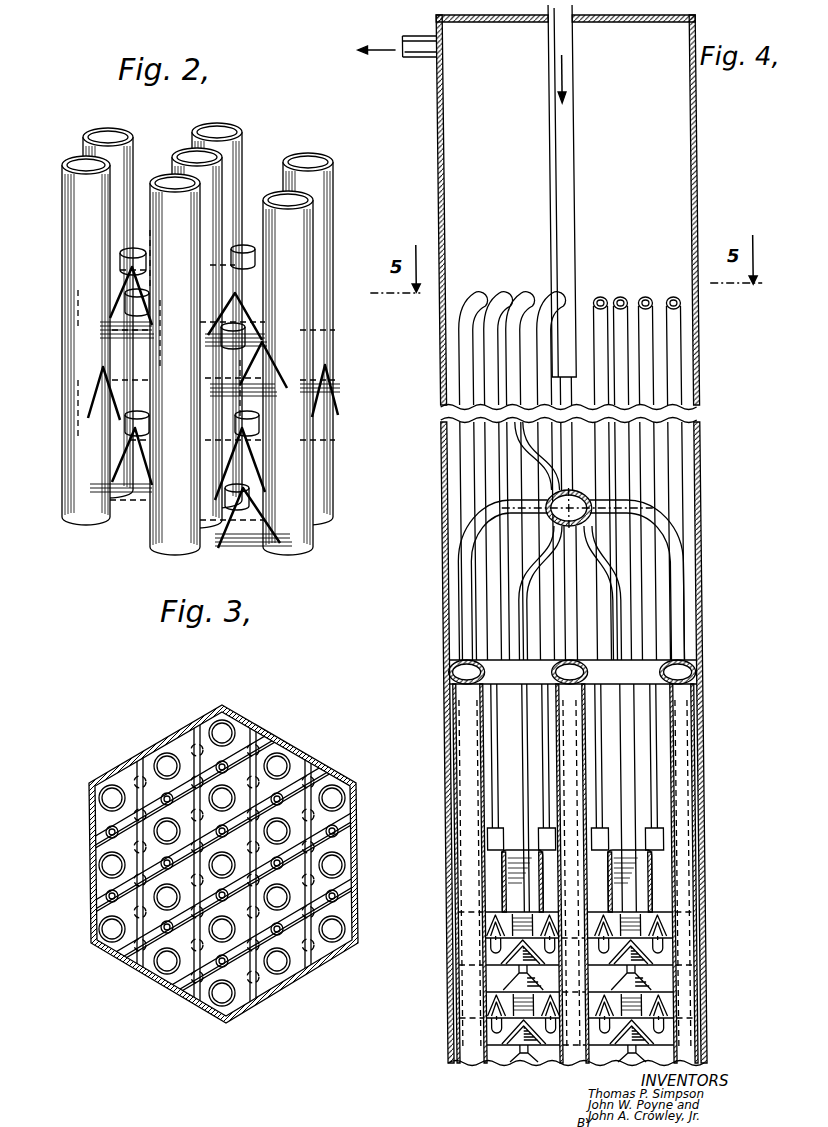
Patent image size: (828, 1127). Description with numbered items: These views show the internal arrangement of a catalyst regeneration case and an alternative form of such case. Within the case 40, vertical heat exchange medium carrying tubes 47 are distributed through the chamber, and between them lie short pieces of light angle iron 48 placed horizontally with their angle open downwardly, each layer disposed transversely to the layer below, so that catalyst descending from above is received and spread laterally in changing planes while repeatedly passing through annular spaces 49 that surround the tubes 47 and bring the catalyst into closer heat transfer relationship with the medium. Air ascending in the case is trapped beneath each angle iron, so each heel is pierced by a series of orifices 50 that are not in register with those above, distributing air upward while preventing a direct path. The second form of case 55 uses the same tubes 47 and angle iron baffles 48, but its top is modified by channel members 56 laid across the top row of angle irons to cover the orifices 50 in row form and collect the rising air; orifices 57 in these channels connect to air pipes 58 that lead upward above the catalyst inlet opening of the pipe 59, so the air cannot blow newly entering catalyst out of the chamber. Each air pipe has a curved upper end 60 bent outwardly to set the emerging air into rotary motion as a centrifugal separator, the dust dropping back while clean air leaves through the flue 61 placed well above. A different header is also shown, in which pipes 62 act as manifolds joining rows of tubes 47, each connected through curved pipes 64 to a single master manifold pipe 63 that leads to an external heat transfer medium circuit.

In FIG. 3, the case 40 is at (359, 838).
In FIG. 2, the heat exchange medium carrying tubes 47 is at (80, 433).
In FIG. 3, the heat exchange medium carrying tubes 47 is at (230, 722).
In FIG. 4, the heat exchange medium carrying tubes 47 is at (470, 712).
In FIG. 2, the angle irons 48 is at (246, 345).
In FIG. 3, the angle irons 48 is at (310, 788).
In FIG. 4, the angle irons 48 is at (507, 978).
In FIG. 3, the annular spaces 49 is at (158, 800).
In FIG. 4, the annular spaces 49 is at (656, 995).
In FIG. 2, the orifices 50 is at (122, 256).
In FIG. 3, the orifices 50 is at (258, 720).
In FIG. 4, the orifices 50 is at (653, 913).
In FIG. 4, the case 55 is at (696, 526).
In FIG. 4, the channel members 56 is at (492, 874).
In FIG. 4, the orifices 57 is at (654, 828).
In FIG. 4, the air pipes 58 is at (648, 718).
In FIG. 4, the pipe 59 is at (548, 42).
In FIG. 4, the curved upper end 60 is at (522, 316).
In FIG. 4, the flue 61 is at (419, 58).
In FIG. 4, the pipes 62 is at (441, 673).
In FIG. 4, the master manifold pipe 63 is at (586, 504).
In FIG. 4, the curved pipes 64 is at (452, 598).